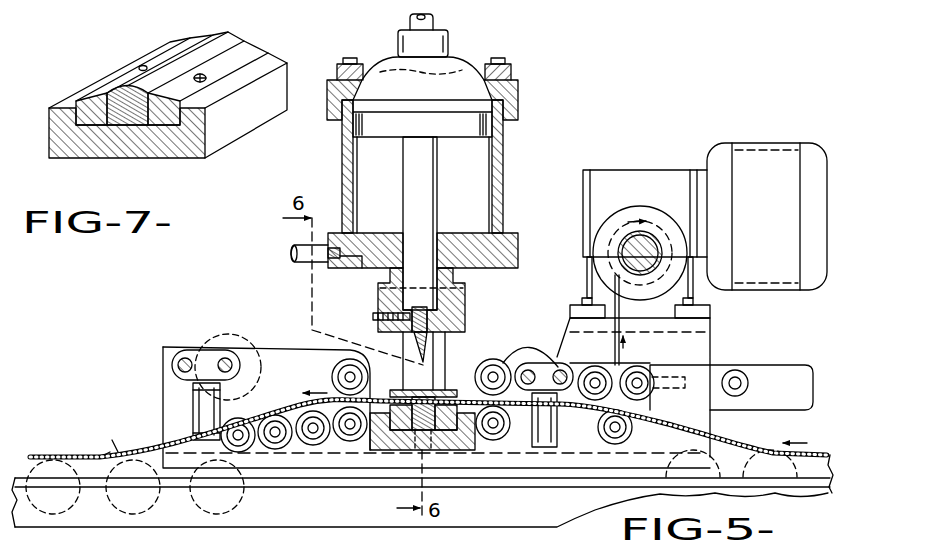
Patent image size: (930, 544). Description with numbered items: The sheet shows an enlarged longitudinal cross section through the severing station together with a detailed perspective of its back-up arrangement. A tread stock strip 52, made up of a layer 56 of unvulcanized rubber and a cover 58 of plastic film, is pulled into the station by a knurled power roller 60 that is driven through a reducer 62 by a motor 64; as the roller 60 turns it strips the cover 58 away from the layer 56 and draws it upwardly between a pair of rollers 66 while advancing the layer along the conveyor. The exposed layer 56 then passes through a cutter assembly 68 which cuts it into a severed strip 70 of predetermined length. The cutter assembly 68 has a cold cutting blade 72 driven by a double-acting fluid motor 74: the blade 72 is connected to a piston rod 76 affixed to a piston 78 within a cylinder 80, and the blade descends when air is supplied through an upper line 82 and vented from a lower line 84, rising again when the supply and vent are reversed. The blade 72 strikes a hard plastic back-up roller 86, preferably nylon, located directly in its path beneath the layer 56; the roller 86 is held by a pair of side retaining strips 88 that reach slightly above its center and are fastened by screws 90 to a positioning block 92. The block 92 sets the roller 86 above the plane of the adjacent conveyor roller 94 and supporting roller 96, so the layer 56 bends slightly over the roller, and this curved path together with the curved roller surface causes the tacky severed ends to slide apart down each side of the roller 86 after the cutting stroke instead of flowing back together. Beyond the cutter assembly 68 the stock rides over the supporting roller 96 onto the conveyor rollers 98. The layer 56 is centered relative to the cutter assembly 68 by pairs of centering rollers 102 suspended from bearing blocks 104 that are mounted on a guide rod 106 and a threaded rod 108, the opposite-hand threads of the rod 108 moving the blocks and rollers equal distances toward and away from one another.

In FIG. 5, the strip 52 is at (746, 445).
In FIG. 5, the layer 56 is at (562, 408).
In FIG. 5, the cover 58 is at (612, 300).
In FIG. 5, the knurled power roller 60 is at (655, 233).
In FIG. 5, the reducer 62 is at (632, 170).
In FIG. 5, the motor 64 is at (793, 150).
In FIG. 5, the rollers 66 is at (640, 369).
In FIG. 5, the cutter assembly 68 is at (367, 311).
In FIG. 5, the severed strip 70 is at (298, 401).
In FIG. 5, the cold cutting blade 72 is at (425, 358).
In FIG. 5, the double-acting fluid motor 74 is at (507, 133).
In FIG. 5, the piston rod 76 is at (438, 165).
In FIG. 5, the piston 78 is at (375, 138).
In FIG. 5, the cylinder 80 is at (342, 170).
In FIG. 5, the upper line 82 is at (434, 20).
In FIG. 5, the lower line 84 is at (296, 246).
In FIG. 7, the back-up roller 86 is at (140, 92).
In FIG. 5, the back-up roller 86 is at (415, 397).
In FIG. 7, the side retaining strips 88 is at (93, 100).
In FIG. 5, the side retaining strips 88 is at (392, 447).
In FIG. 7, the screws 90 is at (206, 76).
In FIG. 5, the screws 90 is at (423, 452).
In FIG. 7, the positioning block 92 is at (162, 158).
In FIG. 5, the positioning block 92 is at (362, 447).
In FIG. 5, the conveyor roller 94 is at (494, 442).
In FIG. 5, the supporting roller 96 is at (333, 440).
In FIG. 5, the conveyor rollers 98 is at (108, 450).
In FIG. 5, the centering rollers 102 is at (193, 398).
In FIG. 5, the bearing blocks 104 is at (203, 349).
In FIG. 5, the guide rod 106 is at (178, 363).
In FIG. 5, the threaded rod 108 is at (228, 358).